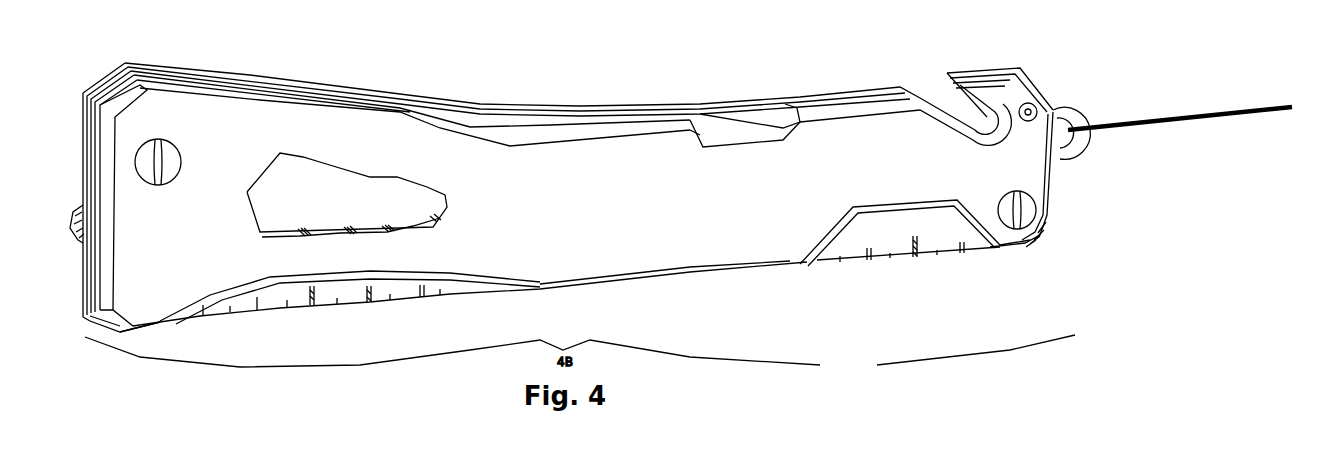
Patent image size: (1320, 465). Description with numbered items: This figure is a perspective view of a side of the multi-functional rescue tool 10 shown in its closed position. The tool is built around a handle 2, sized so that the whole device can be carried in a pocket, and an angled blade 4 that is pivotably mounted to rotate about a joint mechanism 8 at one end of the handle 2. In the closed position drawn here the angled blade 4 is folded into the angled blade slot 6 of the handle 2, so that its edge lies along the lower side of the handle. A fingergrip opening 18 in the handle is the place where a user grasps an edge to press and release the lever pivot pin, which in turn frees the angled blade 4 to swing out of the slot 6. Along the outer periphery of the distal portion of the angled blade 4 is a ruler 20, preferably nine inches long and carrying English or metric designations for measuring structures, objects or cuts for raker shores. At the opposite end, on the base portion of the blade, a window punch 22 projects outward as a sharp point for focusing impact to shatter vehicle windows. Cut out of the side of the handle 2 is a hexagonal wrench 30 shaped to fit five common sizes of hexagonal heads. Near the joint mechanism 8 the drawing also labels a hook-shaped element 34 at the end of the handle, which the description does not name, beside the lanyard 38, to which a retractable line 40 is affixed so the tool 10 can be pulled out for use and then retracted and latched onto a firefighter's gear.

The handle 2 is at (608, 165).
The angled blade 4 is at (478, 104).
The angled blade slot 6 is at (420, 288).
The joint mechanism 8 is at (148, 160).
The multi-functional rescue tool 10 is at (732, 63).
The fingergrip opening 18 is at (520, 128).
The ruler 20 is at (886, 258).
The window punch 22 is at (71, 222).
The hexagonal wrench 30 is at (283, 195).
The hook cutter 34 is at (943, 107).
The lanyard 38 is at (1077, 106).
The retractable line 40 is at (1268, 104).